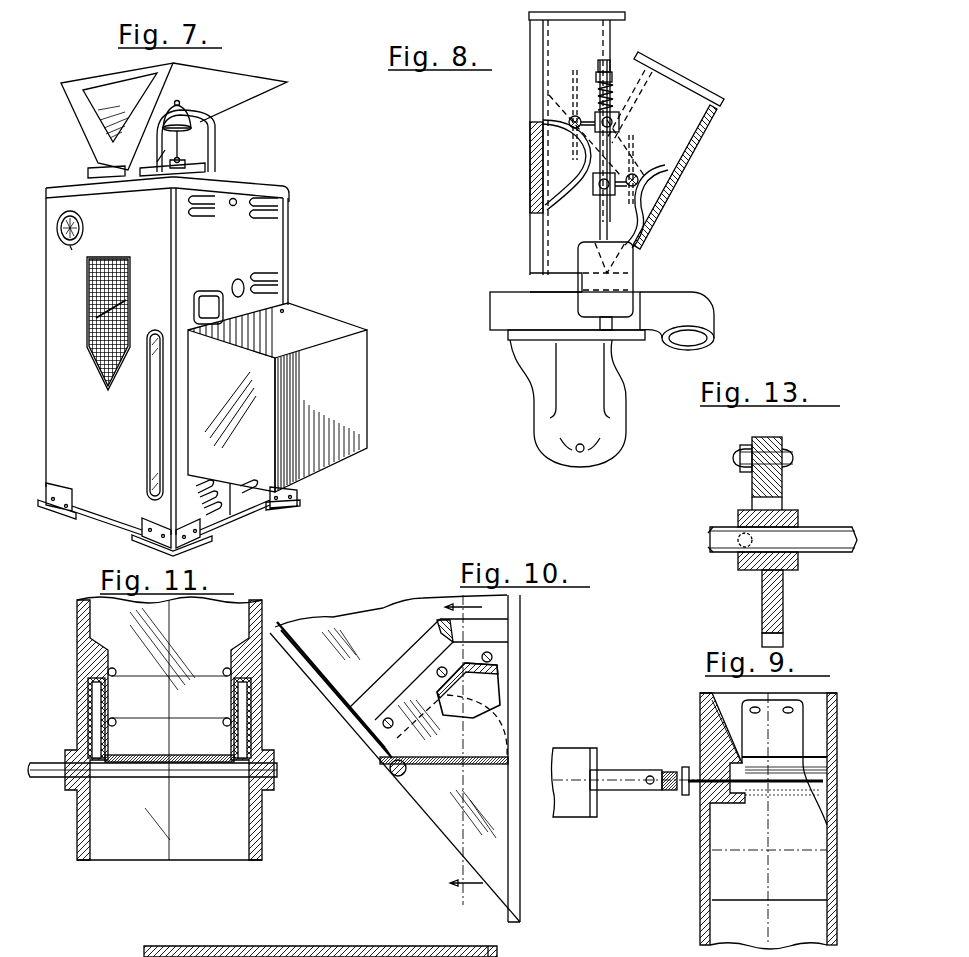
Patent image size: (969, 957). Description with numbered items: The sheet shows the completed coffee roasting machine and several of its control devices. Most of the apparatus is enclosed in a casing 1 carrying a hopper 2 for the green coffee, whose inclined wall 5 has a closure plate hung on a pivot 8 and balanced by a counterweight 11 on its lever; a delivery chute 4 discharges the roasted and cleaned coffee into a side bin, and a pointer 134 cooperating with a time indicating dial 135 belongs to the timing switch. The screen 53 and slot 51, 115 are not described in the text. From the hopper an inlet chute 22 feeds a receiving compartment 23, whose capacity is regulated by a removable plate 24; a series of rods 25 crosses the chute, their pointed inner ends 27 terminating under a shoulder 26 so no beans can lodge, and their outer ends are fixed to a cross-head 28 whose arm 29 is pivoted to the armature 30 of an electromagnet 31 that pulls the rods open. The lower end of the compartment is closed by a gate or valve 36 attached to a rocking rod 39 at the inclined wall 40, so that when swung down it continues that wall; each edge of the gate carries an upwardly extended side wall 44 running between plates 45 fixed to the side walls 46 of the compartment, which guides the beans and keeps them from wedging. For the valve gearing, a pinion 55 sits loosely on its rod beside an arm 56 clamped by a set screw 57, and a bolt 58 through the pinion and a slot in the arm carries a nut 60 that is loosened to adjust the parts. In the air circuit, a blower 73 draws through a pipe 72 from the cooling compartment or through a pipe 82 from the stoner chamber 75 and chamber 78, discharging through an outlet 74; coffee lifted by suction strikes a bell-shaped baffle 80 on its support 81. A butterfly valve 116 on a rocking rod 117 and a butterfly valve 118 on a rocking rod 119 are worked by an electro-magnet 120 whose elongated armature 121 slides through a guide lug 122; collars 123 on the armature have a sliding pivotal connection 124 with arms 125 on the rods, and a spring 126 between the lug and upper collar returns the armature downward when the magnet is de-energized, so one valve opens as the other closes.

In FIG. 7, the casing 1 is at (270, 258).
In FIG. 7, the hopper 2 is at (88, 121).
In FIG. 7, the delivery chute 4 is at (215, 312).
In FIG. 7, the inclined wall 5 is at (222, 110).
In FIG. 7, the pivot 8 is at (358, 410).
In FIG. 10, the counterweight 11 is at (474, 745).
In FIG. 9, the inlet chute 22 is at (815, 739).
In FIG. 9, the receiving compartment 23 is at (722, 926).
In FIG. 9, the plate 24 is at (720, 877).
In FIG. 9, the rods 25 is at (722, 752).
In FIG. 9, the shoulder 26 is at (835, 768).
In FIG. 9, the pointed inner ends 27 is at (830, 782).
In FIG. 9, the cross-head 28 is at (684, 796).
In FIG. 9, the arm 29 is at (668, 773).
In FIG. 9, the armature 30 is at (622, 790).
In FIG. 9, the electromagnet 31 is at (574, 812).
In FIG. 11, the gate or valve 36 is at (205, 763).
In FIG. 10, the gate or valve 36 is at (487, 764).
In FIG. 11, the rocking rod 39 is at (124, 778).
In FIG. 10, the rocking rod 39 is at (396, 777).
In FIG. 11, the inclined wall 40 is at (243, 830).
In FIG. 11, the side wall 44 is at (88, 705).
In FIG. 10, the side wall 44 is at (473, 703).
In FIG. 11, the plates 45 is at (113, 718).
In FIG. 10, the plates 45 is at (412, 690).
In FIG. 11, the side walls 46 is at (77, 620).
In FIG. 10, the side walls 46 is at (372, 612).
In FIG. 7, the slot 51 is at (124, 316).
In FIG. 7, the screen 53 is at (96, 294).
In FIG. 13, the pinion 55 is at (775, 604).
In FIG. 13, the arm 56 is at (752, 481).
In FIG. 13, the set screw 57 is at (744, 550).
In FIG. 13, the bolt 58 is at (791, 453).
In FIG. 13, the nut 60 is at (747, 450).
In FIG. 8, the pipe 72 is at (555, 72).
In FIG. 8, the blower 73 is at (497, 318).
In FIG. 8, the outlet 74 is at (706, 321).
In FIG. 8, the stoner chamber 75 is at (540, 391).
In FIG. 13, the chamber 78 is at (836, 553).
In FIG. 7, the bell-shaped baffle 80 is at (172, 122).
In FIG. 7, the support 81 is at (168, 165).
In FIG. 7, the pipe 82 is at (216, 153).
In FIG. 8, the pipe 82 is at (690, 128).
In FIG. 7, the slot 115 is at (156, 394).
In FIG. 8, the butterfly valve 116 is at (580, 150).
In FIG. 8, the rocking rod 117 is at (569, 122).
In FIG. 8, the butterfly valve 118 is at (650, 205).
In FIG. 8, the rocking rod 119 is at (639, 180).
In FIG. 8, the electro-magnet 120 is at (634, 260).
In FIG. 8, the armature 121 is at (603, 224).
In FIG. 8, the guide lug 122 is at (614, 80).
In FIG. 8, the collars 123 is at (620, 120).
In FIG. 8, the sliding pivotal connection 124 is at (620, 126).
In FIG. 8, the arms 125 is at (578, 96).
In FIG. 8, the spring 126 is at (614, 96).
In FIG. 7, the pointer 134 is at (84, 227).
In FIG. 7, the time indicating dial 135 is at (72, 247).